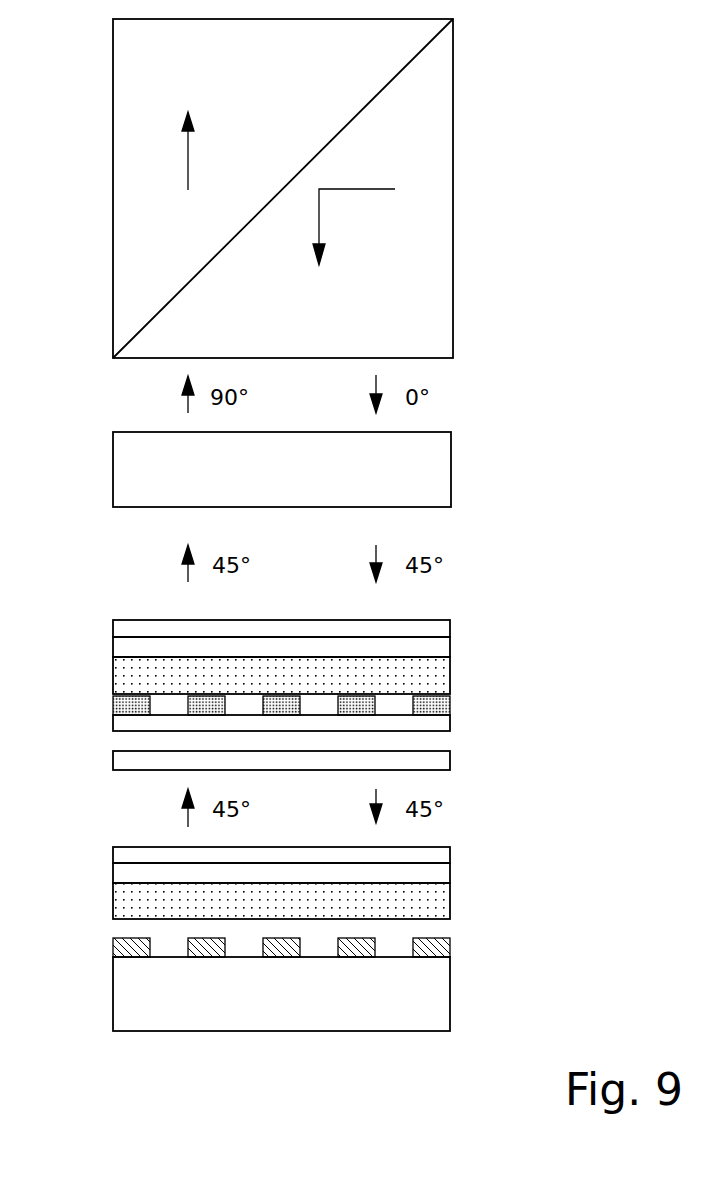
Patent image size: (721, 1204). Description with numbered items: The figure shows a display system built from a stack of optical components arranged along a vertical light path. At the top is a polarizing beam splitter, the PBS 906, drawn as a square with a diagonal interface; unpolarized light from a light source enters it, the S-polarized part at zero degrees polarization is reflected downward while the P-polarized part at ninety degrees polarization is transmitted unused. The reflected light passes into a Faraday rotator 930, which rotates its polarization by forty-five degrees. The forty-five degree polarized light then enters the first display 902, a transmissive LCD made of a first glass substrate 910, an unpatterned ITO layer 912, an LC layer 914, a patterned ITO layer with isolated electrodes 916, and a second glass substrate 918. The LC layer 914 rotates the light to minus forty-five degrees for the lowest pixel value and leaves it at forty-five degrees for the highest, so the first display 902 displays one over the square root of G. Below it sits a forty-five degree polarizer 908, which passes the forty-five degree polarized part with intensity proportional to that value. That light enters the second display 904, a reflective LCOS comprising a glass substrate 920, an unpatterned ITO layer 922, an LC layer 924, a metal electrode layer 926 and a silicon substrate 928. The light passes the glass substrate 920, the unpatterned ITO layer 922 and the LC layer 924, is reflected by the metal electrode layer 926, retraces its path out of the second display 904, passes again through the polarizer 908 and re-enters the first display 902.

The first display 902 is at (305, 633).
The second display 904 is at (295, 923).
The PBS 906 is at (358, 70).
The 45° polarizer 908 is at (467, 760).
The first glass substrate 910 is at (464, 627).
The unpatterned ITO layer 912 is at (467, 650).
The LC layer 914 is at (467, 677).
The isolated electrodes 916 is at (467, 704).
The second glass substrate 918 is at (467, 722).
The glass substrate 920 is at (464, 854).
The unpatterned ITO layer 922 is at (464, 872).
The LC layer 924 is at (464, 900).
The metal electrode layer 926 is at (464, 947).
The silicon substrate 928 is at (413, 1010).
The Faraday rotator 930 is at (451, 468).